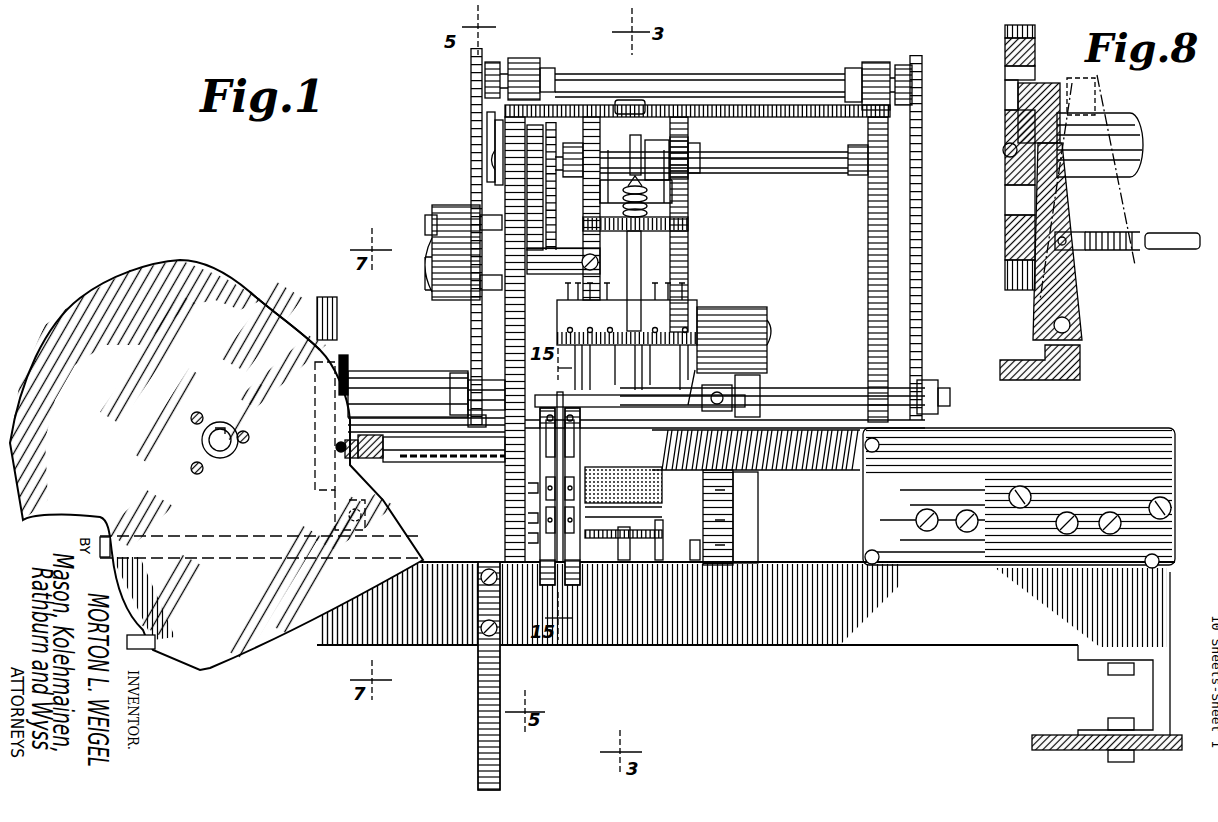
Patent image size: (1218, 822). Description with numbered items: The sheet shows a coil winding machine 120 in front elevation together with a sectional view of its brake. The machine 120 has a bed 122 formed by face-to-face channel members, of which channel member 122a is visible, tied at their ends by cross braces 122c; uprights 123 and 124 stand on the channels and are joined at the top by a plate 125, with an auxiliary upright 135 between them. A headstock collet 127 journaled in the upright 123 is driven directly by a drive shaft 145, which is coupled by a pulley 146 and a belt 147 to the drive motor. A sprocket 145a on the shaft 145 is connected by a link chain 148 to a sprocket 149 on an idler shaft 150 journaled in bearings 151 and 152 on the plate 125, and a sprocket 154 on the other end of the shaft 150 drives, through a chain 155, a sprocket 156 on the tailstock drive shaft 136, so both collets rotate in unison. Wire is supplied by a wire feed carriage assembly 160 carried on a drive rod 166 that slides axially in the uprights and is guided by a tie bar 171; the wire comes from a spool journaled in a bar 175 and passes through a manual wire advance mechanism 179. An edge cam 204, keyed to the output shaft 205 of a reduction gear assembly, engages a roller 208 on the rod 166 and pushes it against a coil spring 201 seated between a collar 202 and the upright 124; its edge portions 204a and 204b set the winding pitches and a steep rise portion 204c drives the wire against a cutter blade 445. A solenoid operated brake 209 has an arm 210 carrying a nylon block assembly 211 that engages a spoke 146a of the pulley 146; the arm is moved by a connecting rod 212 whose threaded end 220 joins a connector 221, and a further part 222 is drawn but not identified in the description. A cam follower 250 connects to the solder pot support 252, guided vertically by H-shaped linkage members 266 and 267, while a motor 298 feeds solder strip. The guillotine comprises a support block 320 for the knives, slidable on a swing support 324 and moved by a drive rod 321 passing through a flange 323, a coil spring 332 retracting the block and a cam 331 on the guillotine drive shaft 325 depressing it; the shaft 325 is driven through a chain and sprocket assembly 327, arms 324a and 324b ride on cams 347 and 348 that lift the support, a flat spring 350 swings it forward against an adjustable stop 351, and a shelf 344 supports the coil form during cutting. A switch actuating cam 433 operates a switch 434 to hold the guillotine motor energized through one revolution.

In FIG. 1, the machine 120 is at (378, 160).
In FIG. 1, the bed 122 is at (930, 654).
In FIG. 1, the channel member 122a is at (830, 648).
In FIG. 1, the cross braces 122c is at (1153, 693).
In FIG. 1, the upright 123 is at (505, 521).
In FIG. 1, the upright 124 is at (868, 243).
In FIG. 1, the plate 125 is at (775, 117).
In FIG. 1, the headstock collet 127 is at (562, 397).
In FIG. 1, the auxiliary upright 135 is at (745, 518).
In FIG. 1, the tailstock drive shaft 136 is at (845, 396).
In FIG. 1, the drive shaft 145 is at (420, 364).
In FIG. 8, the drive shaft 145 is at (1115, 120).
In FIG. 1, the sprocket 145a is at (460, 372).
In FIG. 8, the pulley 146 is at (1036, 52).
In FIG. 8, the spoke 146a is at (1012, 155).
In FIG. 1, the belt 147 is at (330, 297).
In FIG. 8, the belt 147 is at (1036, 32).
In FIG. 1, the link chain 148 is at (472, 332).
In FIG. 1, the sprocket 149 is at (497, 62).
In FIG. 1, the idler shaft 150 is at (806, 66).
In FIG. 1, the bearing 151 is at (528, 60).
In FIG. 1, the bearing 152 is at (885, 48).
In FIG. 1, the sprocket 154 is at (910, 58).
In FIG. 1, the chain 155 is at (925, 158).
In FIG. 1, the sprocket 156 is at (930, 386).
In FIG. 1, the wire feed carriage assembly 160 is at (593, 574).
In FIG. 1, the drive rod 166 is at (432, 446).
In FIG. 1, the guide rod or tie bar 171 is at (805, 418).
In FIG. 1, the bar 175 is at (478, 669).
In FIG. 1, the manual wire advance mechanism 179 is at (535, 477).
In FIG. 1, the coil spring 201 is at (822, 475).
In FIG. 1, the collar 202 is at (648, 505).
In FIG. 1, the edge cam 204 is at (160, 262).
In FIG. 1, the edge portion 204a is at (342, 432).
In FIG. 1, the edge portion 204b is at (278, 302).
In FIG. 1, the steep rise portion 204c is at (399, 604).
In FIG. 1, the output shaft 205 is at (200, 440).
In FIG. 1, the roller 208 is at (333, 488).
In FIG. 1, the solenoid operated brake 209 is at (378, 350).
In FIG. 8, the solenoid operated brake 209 is at (1108, 269).
In FIG. 1, the arm 210 is at (352, 434).
In FIG. 8, the arm 210 is at (1075, 292).
In FIG. 1, the block assembly 211 is at (347, 355).
In FIG. 8, the block assembly 211 is at (1012, 100).
In FIG. 1, the connecting rod 212 is at (425, 463).
In FIG. 8, the connecting rod 212 is at (1190, 232).
In FIG. 8, the end 220 is at (1126, 232).
In FIG. 8, the connector 221 is at (1083, 236).
In FIG. 8, the bushing 222 is at (1040, 220).
In FIG. 1, the cam follower 250 is at (605, 555).
In FIG. 1, the solder pot support 252 is at (660, 555).
In FIG. 1, the linkage member 266 is at (740, 497).
In FIG. 1, the linkage member 267 is at (695, 558).
In FIG. 1, the motor 298 is at (458, 210).
In FIG. 1, the support block 320 is at (712, 308).
In FIG. 1, the drive rod 321 is at (642, 255).
In FIG. 1, the flange 323 is at (690, 225).
In FIG. 1, the swing or pendulum support 324 is at (690, 270).
In FIG. 1, the arm 324a is at (606, 102).
In FIG. 1, the arm 324b is at (670, 140).
In FIG. 1, the guillotine drive shaft 325 is at (785, 172).
In FIG. 1, the chain and sprocket assembly 327 is at (568, 195).
In FIG. 1, the cam 331 is at (638, 135).
In FIG. 1, the coil spring 332 is at (650, 200).
In FIG. 1, the shelf 344 is at (712, 385).
In FIG. 1, the cam 347 is at (574, 148).
In FIG. 1, the cam 348 is at (700, 148).
In FIG. 1, the flat spring 350 is at (635, 100).
In FIG. 1, the adjustable stop 351 is at (578, 274).
In FIG. 1, the switch actuating cam 433 is at (490, 114).
In FIG. 1, the switch 434 is at (497, 132).
In FIG. 1, the cutter blade 445 is at (726, 390).